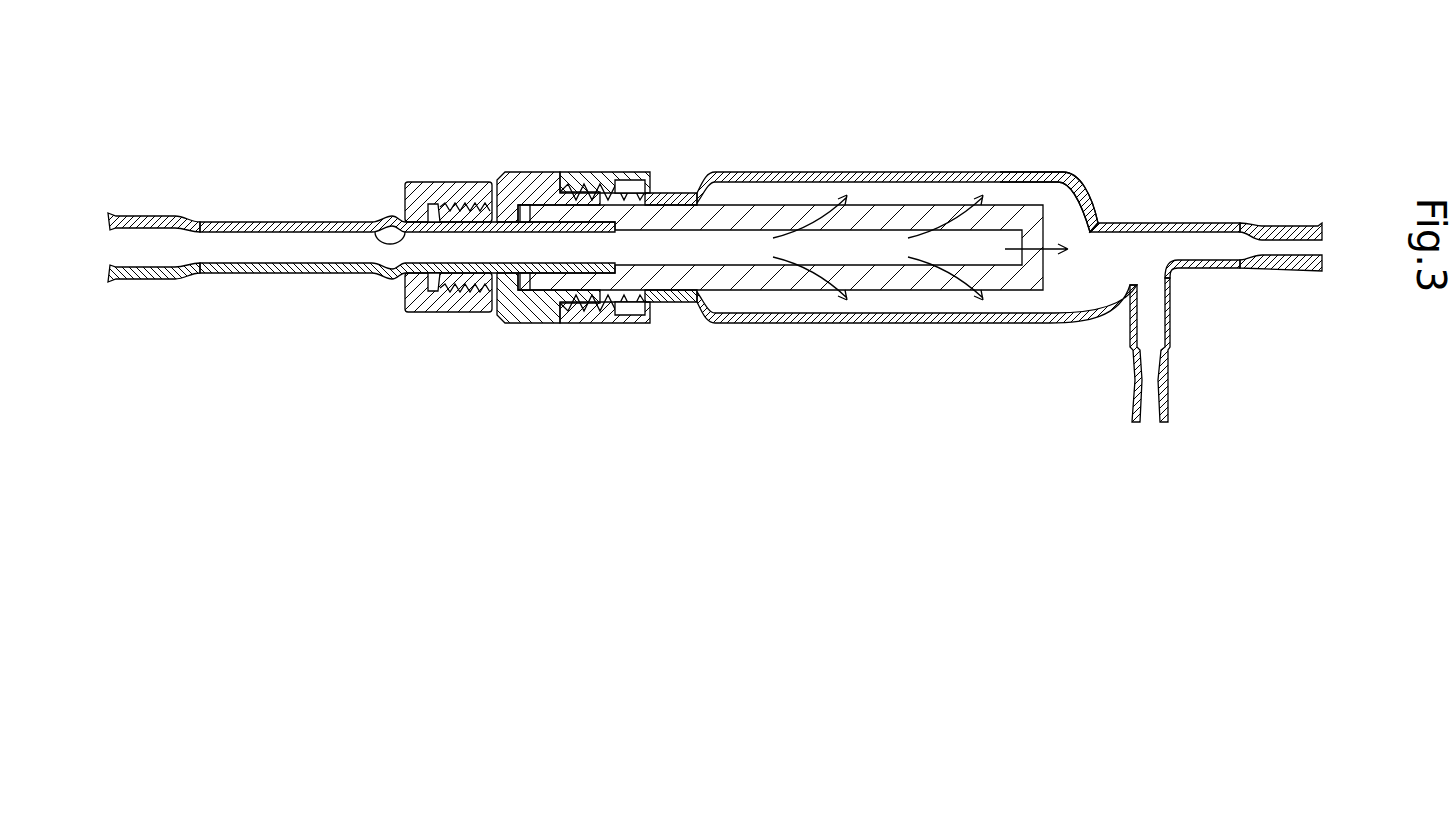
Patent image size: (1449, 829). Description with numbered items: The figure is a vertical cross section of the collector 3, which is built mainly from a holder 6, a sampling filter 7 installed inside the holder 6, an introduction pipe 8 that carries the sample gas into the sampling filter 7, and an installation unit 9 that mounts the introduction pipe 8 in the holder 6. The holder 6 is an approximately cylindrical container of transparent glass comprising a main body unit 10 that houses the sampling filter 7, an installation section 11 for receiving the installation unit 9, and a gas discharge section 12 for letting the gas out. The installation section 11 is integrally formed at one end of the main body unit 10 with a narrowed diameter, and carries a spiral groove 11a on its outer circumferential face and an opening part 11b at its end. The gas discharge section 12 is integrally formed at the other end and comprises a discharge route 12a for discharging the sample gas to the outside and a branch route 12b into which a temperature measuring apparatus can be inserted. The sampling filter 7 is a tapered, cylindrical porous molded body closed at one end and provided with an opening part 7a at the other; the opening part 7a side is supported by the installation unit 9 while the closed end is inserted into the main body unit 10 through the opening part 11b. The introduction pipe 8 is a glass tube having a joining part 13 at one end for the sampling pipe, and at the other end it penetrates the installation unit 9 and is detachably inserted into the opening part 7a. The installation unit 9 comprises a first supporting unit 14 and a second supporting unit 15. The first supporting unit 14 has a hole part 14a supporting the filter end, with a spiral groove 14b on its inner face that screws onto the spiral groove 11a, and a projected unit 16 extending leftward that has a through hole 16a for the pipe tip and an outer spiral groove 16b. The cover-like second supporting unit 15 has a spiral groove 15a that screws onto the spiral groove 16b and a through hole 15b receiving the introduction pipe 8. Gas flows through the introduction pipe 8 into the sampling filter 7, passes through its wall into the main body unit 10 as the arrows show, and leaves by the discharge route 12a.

The collector 3 is at (958, 160).
The holder 6 is at (838, 170).
The sampling filter 7 is at (878, 278).
The opening part 7a is at (515, 300).
The introduction pipe 8 is at (263, 222).
The installation unit 9 is at (527, 168).
The main body unit 10 is at (1015, 185).
The installation section 11 is at (663, 193).
The spiral groove 11a is at (622, 172).
The opening part 11b is at (577, 305).
The gas discharge section 12 is at (1150, 250).
The discharge route 12a is at (1230, 240).
The branch route 12b is at (1152, 345).
The joining part 13 is at (133, 265).
The first supporting unit 14 is at (633, 322).
The hole part 14a is at (552, 205).
The spiral groove 14b is at (592, 305).
The second supporting unit 15 is at (405, 312).
The spiral groove 15a is at (447, 312).
The through hole 15b is at (368, 222).
The projected unit 16 is at (453, 205).
The through hole 16a is at (478, 195).
The spiral groove 16b is at (445, 205).